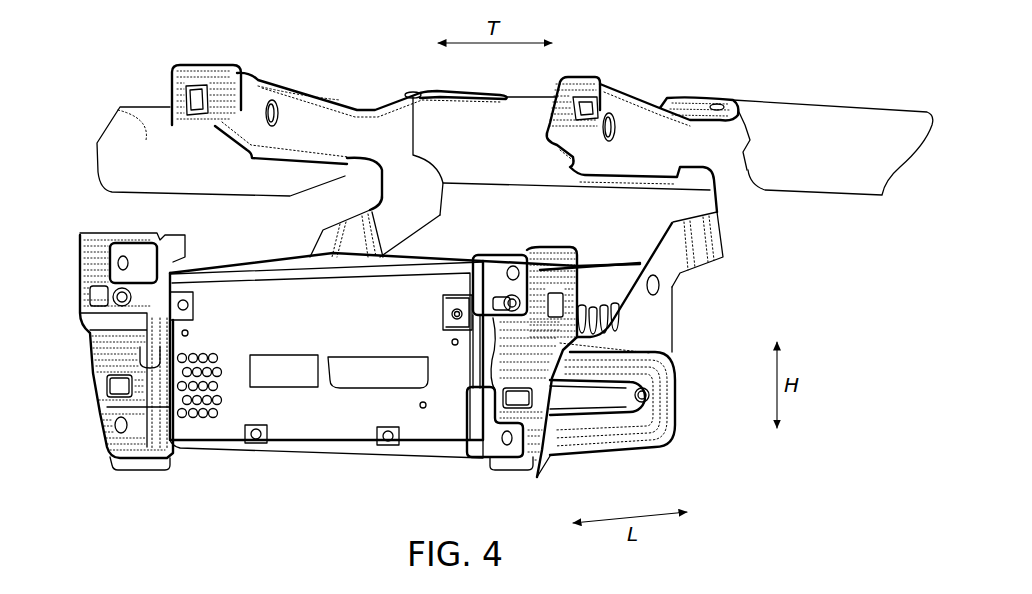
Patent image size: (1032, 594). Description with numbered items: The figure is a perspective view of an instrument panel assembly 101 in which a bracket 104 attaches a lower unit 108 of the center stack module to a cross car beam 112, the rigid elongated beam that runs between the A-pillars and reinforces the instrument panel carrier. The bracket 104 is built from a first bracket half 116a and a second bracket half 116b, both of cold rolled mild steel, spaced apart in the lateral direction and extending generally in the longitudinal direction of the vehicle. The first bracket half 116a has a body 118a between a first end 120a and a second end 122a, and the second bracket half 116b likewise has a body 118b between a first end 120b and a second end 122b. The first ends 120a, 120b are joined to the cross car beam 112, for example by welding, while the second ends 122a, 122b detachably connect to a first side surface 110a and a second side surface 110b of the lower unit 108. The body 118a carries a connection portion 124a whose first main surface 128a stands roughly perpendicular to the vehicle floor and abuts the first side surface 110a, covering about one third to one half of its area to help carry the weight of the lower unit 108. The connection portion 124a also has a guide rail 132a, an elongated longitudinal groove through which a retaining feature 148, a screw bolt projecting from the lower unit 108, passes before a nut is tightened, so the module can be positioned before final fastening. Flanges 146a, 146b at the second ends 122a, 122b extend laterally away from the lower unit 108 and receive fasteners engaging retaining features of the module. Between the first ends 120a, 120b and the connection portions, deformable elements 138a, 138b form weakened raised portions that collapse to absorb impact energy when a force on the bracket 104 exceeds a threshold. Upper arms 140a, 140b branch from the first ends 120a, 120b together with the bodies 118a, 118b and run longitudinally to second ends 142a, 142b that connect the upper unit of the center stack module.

The instrument panel assembly 101 is at (735, 42).
The bracket 104 is at (748, 262).
The lower unit 108 is at (425, 430).
The first side surface 110a is at (600, 283).
The second side surface 110b is at (247, 263).
The cross car beam 112 is at (867, 110).
The first bracket half 116a is at (679, 373).
The second bracket half 116b is at (86, 381).
The body 118a is at (657, 323).
The body 118b is at (318, 243).
The first end 120a is at (733, 150).
The first end 120b is at (432, 202).
The second end 122a is at (513, 468).
The second end 122b is at (148, 460).
The connection portion 124a is at (650, 437).
The first main surface 128a is at (610, 420).
The guide rail 132a is at (563, 400).
The deformable element 138a is at (697, 253).
The deformable element 138b is at (355, 237).
The upper arm 140a is at (642, 99).
The upper arm 140b is at (317, 89).
The second end 142a is at (579, 82).
The second end 142b is at (242, 98).
The flange 146a is at (513, 338).
The flange 146b is at (97, 262).
The retaining feature 148 is at (648, 396).